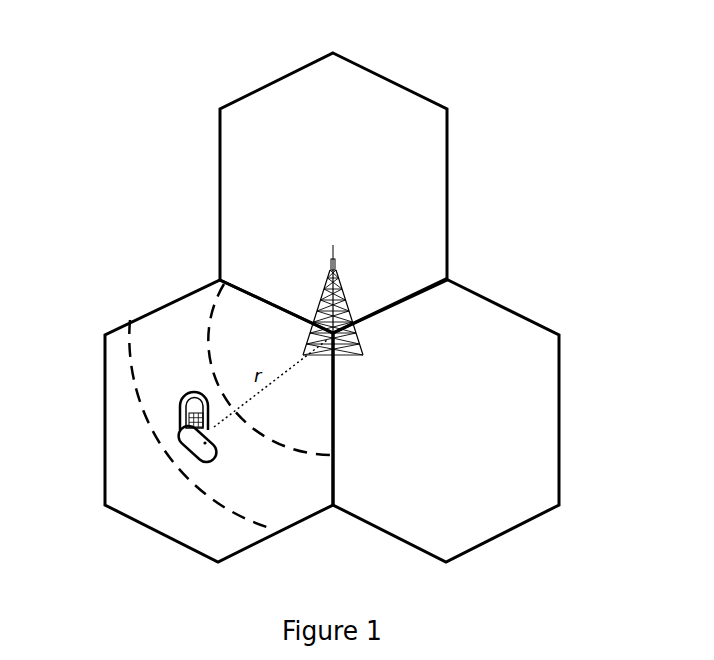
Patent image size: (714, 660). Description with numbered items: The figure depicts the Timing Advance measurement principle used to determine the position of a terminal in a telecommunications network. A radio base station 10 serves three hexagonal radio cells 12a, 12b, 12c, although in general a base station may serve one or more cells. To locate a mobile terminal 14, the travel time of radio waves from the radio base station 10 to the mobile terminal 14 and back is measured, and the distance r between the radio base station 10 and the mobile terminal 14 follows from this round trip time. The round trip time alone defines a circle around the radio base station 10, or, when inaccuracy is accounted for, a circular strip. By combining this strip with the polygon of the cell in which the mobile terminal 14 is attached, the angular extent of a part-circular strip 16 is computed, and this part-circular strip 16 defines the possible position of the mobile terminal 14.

The radio base station 10 is at (323, 300).
The radio cell 12a is at (376, 70).
The radio cell 12b is at (543, 323).
The radio cell 12c is at (105, 350).
The mobile terminal 14 is at (186, 446).
The part-circular strip 16 is at (180, 360).